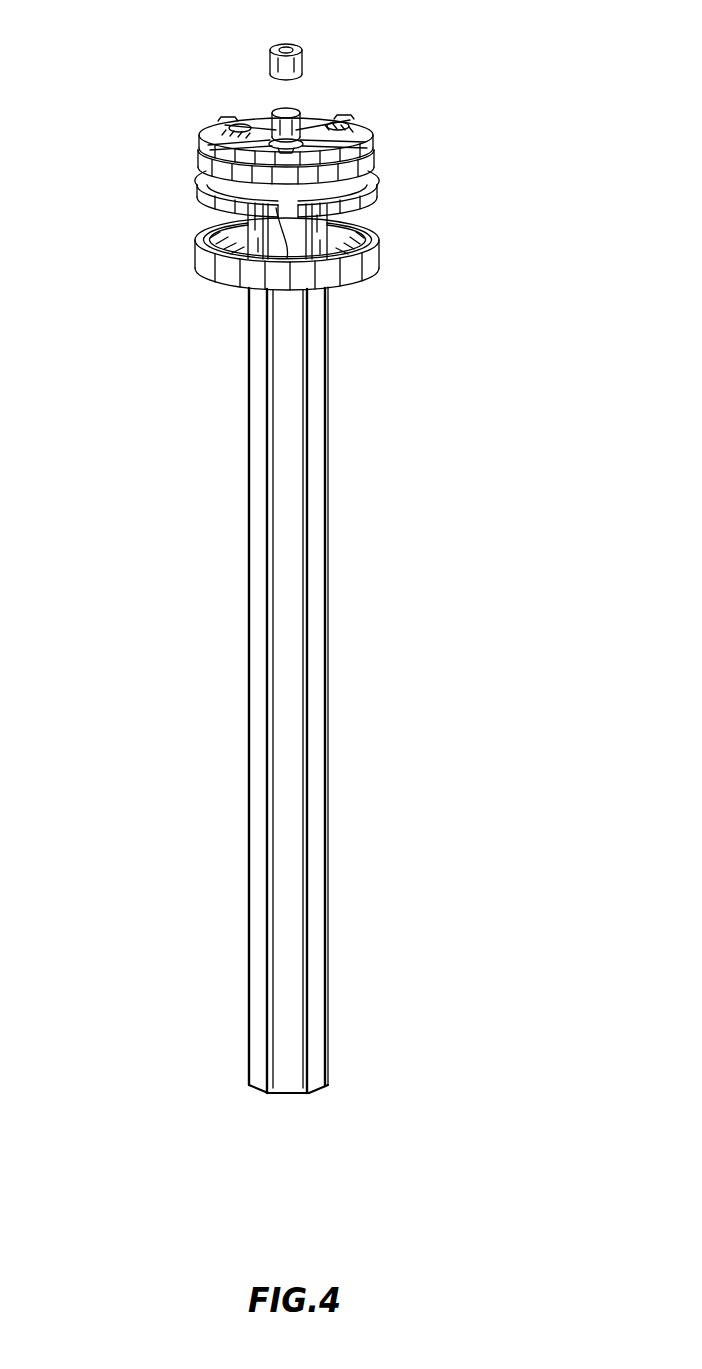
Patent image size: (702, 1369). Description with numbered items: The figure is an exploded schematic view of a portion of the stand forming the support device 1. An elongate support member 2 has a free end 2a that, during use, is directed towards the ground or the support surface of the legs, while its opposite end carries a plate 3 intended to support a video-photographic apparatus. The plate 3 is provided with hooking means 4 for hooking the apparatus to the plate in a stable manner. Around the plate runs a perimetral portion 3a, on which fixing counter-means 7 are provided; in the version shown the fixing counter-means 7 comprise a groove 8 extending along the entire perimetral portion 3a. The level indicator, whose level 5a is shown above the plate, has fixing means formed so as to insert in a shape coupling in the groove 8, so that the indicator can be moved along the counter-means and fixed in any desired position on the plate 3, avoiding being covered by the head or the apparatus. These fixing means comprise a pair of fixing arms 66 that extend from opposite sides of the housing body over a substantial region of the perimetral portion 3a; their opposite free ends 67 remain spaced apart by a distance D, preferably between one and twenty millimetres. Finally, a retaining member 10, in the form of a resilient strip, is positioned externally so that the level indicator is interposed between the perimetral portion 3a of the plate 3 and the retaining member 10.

The support device 1 is at (472, 87).
The support member 2 is at (258, 672).
The free end 2a is at (268, 1096).
The plate 3 is at (356, 129).
The perimetral portion 3a is at (376, 141).
The hooking means 4 is at (300, 110).
The level 5a is at (268, 60).
The fixing counter-means 7 is at (180, 141).
The groove 8 is at (196, 152).
The retaining member 10 is at (366, 271).
The fixing arms 66 is at (203, 187).
The free ends 67 is at (268, 222).
The distance D is at (278, 226).